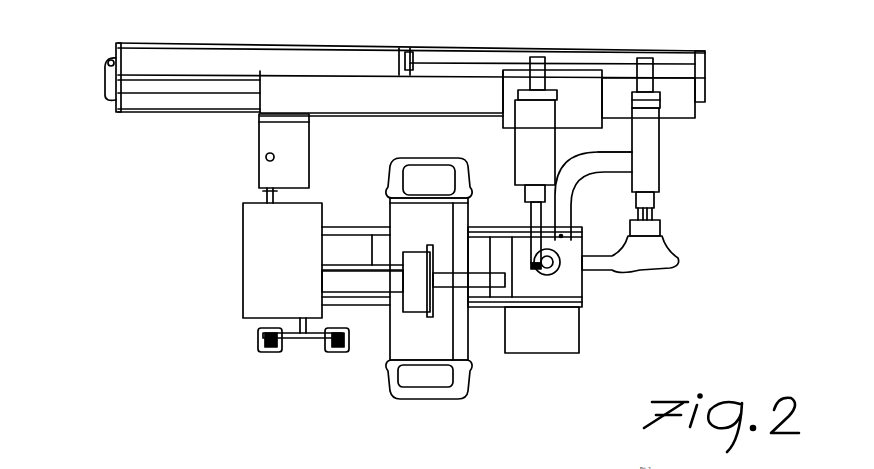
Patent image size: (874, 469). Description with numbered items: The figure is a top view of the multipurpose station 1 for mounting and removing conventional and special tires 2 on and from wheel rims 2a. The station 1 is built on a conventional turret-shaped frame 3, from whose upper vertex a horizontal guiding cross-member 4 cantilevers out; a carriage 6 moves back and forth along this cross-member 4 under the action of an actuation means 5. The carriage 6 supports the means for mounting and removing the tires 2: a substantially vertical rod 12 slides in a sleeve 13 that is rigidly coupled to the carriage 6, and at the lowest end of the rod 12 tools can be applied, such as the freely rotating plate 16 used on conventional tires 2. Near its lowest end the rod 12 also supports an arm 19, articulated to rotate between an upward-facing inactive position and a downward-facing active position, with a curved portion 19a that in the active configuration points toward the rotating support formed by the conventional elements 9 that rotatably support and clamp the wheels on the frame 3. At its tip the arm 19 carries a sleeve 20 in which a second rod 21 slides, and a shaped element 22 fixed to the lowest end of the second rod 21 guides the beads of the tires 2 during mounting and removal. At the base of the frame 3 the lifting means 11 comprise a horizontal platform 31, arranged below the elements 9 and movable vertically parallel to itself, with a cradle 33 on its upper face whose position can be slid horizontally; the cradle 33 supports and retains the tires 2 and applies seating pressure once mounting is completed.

The multipurpose station 1 is at (166, 283).
The tire 2 is at (443, 395).
The wheel rim 2a is at (402, 340).
The turret-shaped frame 3 is at (258, 240).
The horizontal guiding cross-member 4 is at (383, 95).
The actuation means 5 is at (152, 66).
The carriage 6 is at (573, 90).
The supporting and clamping elements 9 is at (348, 303).
The lifting means 11 is at (347, 8).
The vertical rod 12 is at (526, 250).
The sleeve 13 is at (514, 142).
The freely rotating plate 16 is at (560, 270).
The arm 19 is at (560, 197).
The curved portion 19a is at (607, 163).
The sleeve 20 is at (643, 181).
The second rod 21 is at (646, 72).
The shaped element 22 is at (655, 258).
The horizontal platform 31 is at (345, 235).
The cradle 33 is at (378, 255).